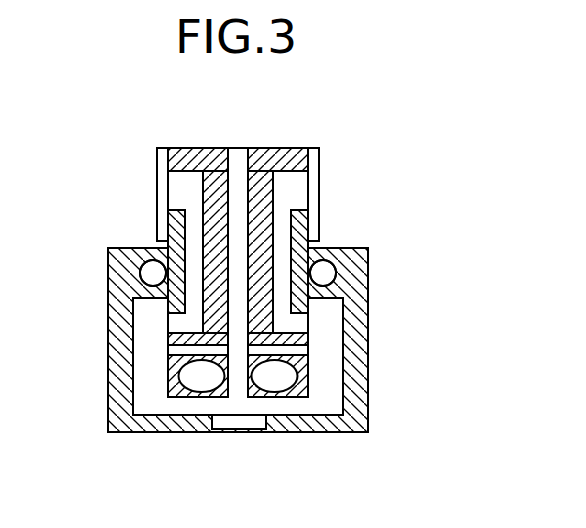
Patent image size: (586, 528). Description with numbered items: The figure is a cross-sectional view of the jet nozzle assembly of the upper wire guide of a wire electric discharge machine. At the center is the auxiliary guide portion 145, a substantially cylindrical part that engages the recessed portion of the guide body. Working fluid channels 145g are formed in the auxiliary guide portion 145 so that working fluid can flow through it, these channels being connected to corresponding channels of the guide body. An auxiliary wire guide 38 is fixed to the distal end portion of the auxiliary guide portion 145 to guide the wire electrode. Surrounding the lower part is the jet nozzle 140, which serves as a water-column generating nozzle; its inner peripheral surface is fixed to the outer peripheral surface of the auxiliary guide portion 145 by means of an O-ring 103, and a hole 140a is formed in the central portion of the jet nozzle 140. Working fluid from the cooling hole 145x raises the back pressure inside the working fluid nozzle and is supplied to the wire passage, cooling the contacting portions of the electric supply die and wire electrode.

The auxiliary wire guide 38 is at (202, 378).
The O-ring 103 is at (155, 273).
The jet nozzle 140 is at (108, 432).
The hole 140a is at (250, 420).
The auxiliary guide portion 145 is at (290, 190).
The working fluid channels 145g is at (193, 187).
The cooling hole 145x is at (306, 350).